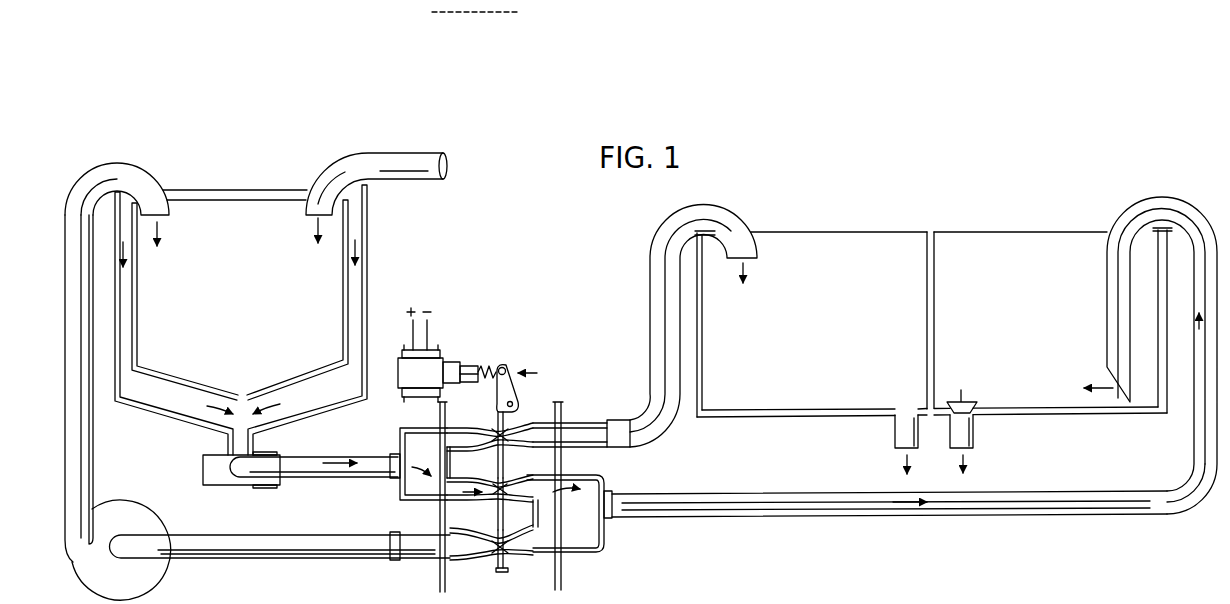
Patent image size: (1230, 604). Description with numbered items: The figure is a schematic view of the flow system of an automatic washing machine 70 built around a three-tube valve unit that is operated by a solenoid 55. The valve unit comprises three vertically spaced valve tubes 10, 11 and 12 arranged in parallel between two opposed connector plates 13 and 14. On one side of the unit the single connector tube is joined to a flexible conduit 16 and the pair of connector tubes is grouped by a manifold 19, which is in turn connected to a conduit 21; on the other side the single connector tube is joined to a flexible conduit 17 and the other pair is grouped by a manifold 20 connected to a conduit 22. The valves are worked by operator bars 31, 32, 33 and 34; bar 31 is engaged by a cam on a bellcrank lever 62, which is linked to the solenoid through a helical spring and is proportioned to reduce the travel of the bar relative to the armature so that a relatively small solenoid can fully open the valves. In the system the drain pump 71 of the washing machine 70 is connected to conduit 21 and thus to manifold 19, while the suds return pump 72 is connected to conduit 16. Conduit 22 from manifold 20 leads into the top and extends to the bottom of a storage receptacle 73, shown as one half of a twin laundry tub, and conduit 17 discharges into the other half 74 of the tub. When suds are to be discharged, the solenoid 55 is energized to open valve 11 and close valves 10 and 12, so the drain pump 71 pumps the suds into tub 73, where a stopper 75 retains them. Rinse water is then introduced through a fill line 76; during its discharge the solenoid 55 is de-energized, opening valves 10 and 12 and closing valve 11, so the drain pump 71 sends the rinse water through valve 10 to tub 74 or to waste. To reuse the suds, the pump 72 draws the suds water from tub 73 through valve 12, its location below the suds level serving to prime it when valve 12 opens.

The valve tube 10 is at (513, 426).
The valve tube 11 is at (513, 477).
The valve tube 12 is at (513, 556).
The connector plate 13 is at (434, 503).
The connector plate 14 is at (569, 503).
The flexible conduit 16 is at (377, 546).
The flexible conduit 17 is at (616, 432).
The manifold 19 is at (410, 424).
The manifold 20 is at (590, 553).
The conduit 21 is at (377, 455).
The conduit 22 is at (642, 498).
The operator bar 31 is at (497, 429).
The operator bar 32 is at (497, 466).
The operator bar 33 is at (497, 521).
The operator bar 34 is at (497, 553).
The solenoid 55 is at (455, 351).
The bellcrank lever 62 is at (509, 392).
The washing machine 70 is at (366, 261).
The drain pump 71 is at (203, 468).
The suds return pump 72 is at (150, 574).
The storage receptacle 73 is at (1027, 233).
The laundry tub half 74 is at (826, 242).
The stopper 75 is at (963, 409).
The fill line 76 is at (427, 173).